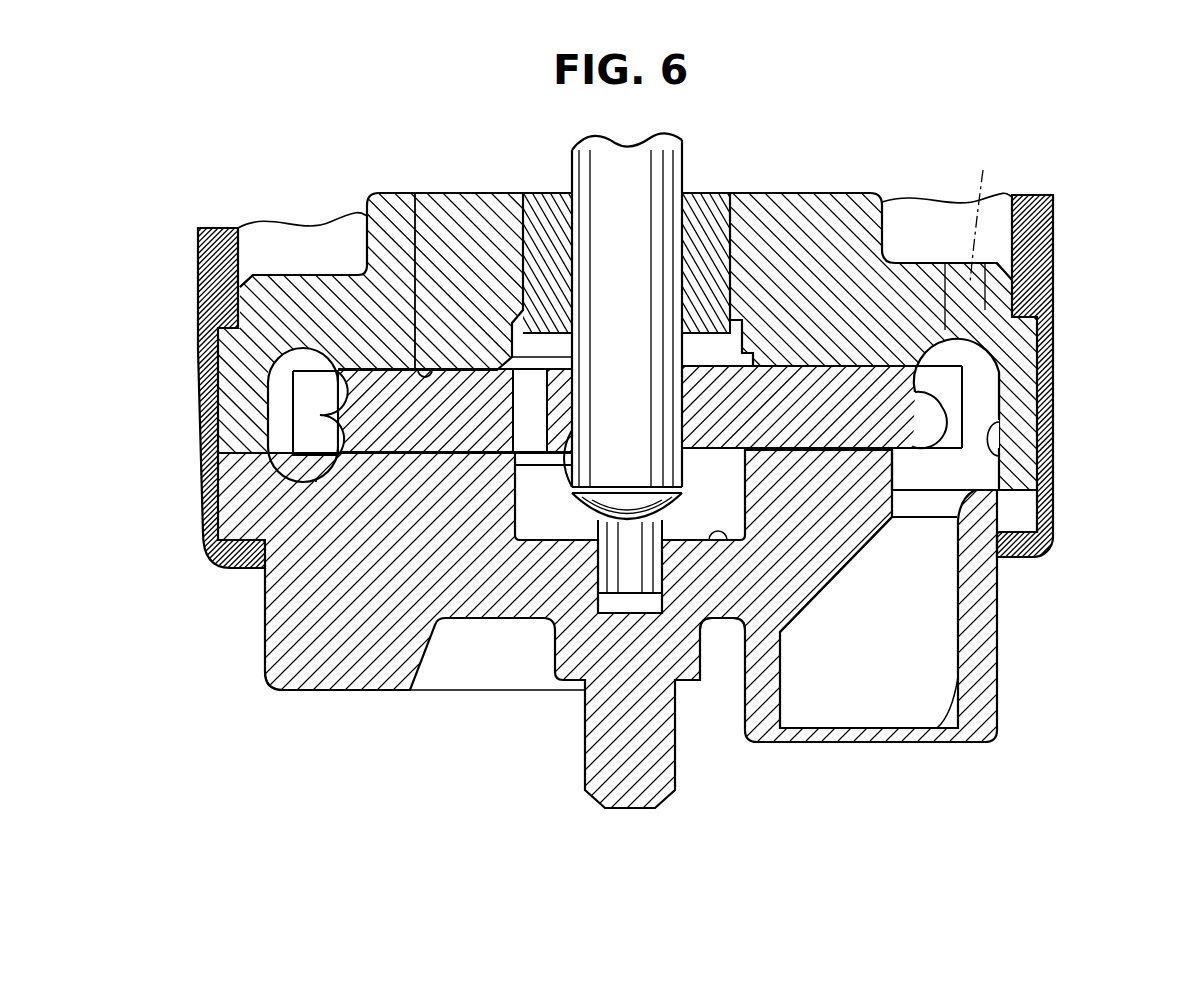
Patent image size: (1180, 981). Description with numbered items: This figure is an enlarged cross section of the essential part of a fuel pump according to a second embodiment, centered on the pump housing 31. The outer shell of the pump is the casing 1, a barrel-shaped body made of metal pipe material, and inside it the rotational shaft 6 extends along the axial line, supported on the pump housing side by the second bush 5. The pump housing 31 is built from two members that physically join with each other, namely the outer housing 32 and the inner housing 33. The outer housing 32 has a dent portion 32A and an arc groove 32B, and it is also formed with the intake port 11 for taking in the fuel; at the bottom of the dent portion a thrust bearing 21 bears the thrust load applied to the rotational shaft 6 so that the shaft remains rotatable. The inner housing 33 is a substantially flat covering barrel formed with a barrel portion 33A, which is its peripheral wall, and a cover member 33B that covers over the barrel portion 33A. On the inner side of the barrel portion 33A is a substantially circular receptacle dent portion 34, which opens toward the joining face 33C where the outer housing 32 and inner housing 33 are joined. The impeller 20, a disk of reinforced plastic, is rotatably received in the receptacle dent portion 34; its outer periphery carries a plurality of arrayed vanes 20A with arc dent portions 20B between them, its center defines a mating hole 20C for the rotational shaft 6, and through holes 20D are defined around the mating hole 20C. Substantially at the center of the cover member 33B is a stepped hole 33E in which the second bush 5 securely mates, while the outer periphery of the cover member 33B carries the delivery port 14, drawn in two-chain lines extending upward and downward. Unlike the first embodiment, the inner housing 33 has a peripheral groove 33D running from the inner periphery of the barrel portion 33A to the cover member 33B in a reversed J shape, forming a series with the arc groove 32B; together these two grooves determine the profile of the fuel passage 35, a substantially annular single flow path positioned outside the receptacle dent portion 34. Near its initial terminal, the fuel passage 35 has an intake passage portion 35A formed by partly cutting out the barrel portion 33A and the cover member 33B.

The casing 1 is at (1037, 227).
The second bush 5 is at (537, 210).
The rotational shaft 6 is at (577, 182).
The intake port 11 is at (942, 730).
The delivery port 14 is at (988, 213).
The impeller 20 is at (878, 373).
The vanes 20A is at (315, 383).
The arc dent portions 20B is at (920, 383).
The mating hole 20C is at (578, 428).
The through hole 20D is at (517, 357).
The thrust bearing 21 is at (623, 595).
The pump housing 31 is at (590, 490).
The outer housing 32 is at (333, 673).
The dent portion 32A is at (719, 540).
The arc groove 32B is at (262, 533).
The inner housing 33 is at (262, 283).
The barrel portion 33A is at (235, 441).
The cover member 33B is at (807, 212).
The joining face 33C is at (290, 483).
The peripheral groove 33D is at (245, 363).
The stepped hole 33E is at (717, 208).
The receptacle dent portion 34 is at (416, 245).
The fuel passage 35 is at (280, 407).
The intake passage portion 35A is at (970, 448).